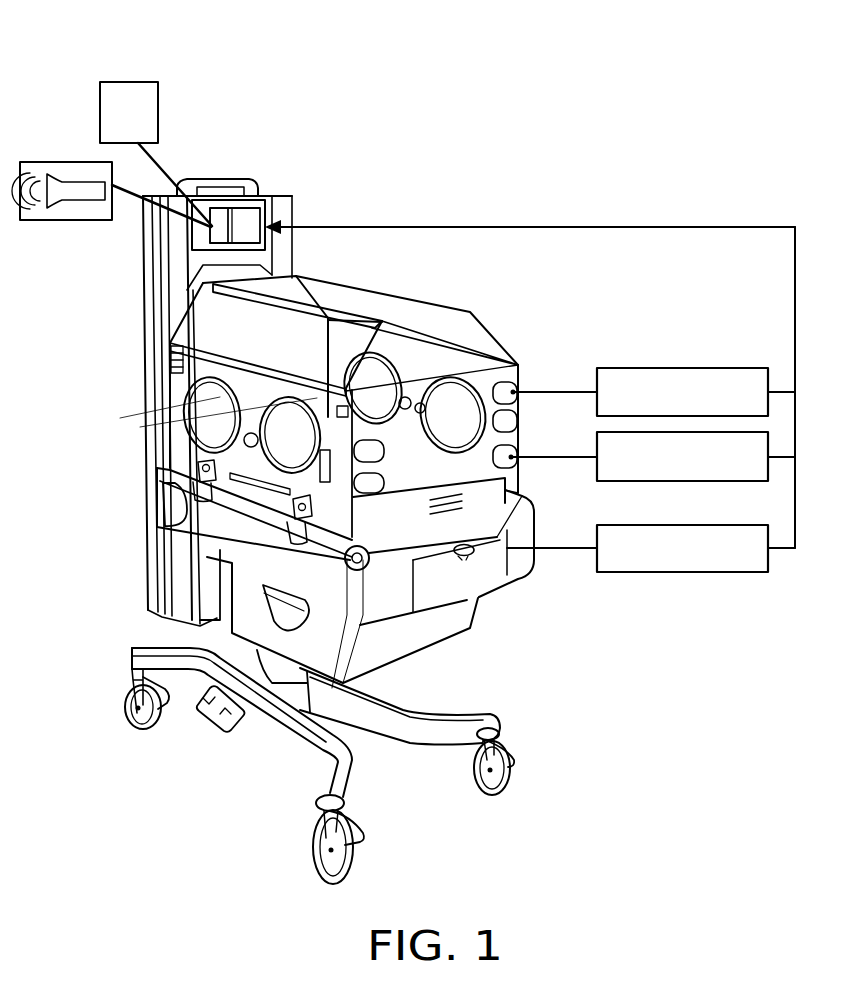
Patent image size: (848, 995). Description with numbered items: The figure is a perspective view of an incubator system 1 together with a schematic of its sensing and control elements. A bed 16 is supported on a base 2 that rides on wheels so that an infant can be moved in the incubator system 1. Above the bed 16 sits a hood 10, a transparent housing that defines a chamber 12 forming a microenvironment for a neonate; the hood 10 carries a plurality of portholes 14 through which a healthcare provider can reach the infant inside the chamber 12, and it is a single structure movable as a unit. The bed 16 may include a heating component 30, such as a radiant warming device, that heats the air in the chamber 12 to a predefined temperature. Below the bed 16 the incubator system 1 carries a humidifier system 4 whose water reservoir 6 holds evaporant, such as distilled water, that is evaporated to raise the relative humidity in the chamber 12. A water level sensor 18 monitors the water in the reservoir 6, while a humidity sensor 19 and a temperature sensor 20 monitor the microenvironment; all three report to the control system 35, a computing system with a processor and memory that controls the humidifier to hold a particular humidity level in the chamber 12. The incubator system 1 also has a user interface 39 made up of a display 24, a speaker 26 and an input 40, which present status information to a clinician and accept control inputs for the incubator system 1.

The incubator system 1 is at (217, 168).
The base 2 is at (481, 706).
The humidifier system 4 is at (510, 535).
The water reservoir 6 is at (480, 609).
The hood 10 is at (500, 341).
The chamber 12 is at (472, 333).
The portholes 14 is at (202, 411).
The bed 16 is at (508, 489).
The water level sensor 18 is at (683, 572).
The humidity sensor 19 is at (770, 440).
The temperature sensor 20 is at (684, 368).
The display 24 is at (256, 213).
The speaker 26 is at (68, 162).
The heating component 30 is at (428, 560).
The control system 35 is at (273, 209).
The user interface 39 is at (237, 206).
The input 40 is at (128, 83).